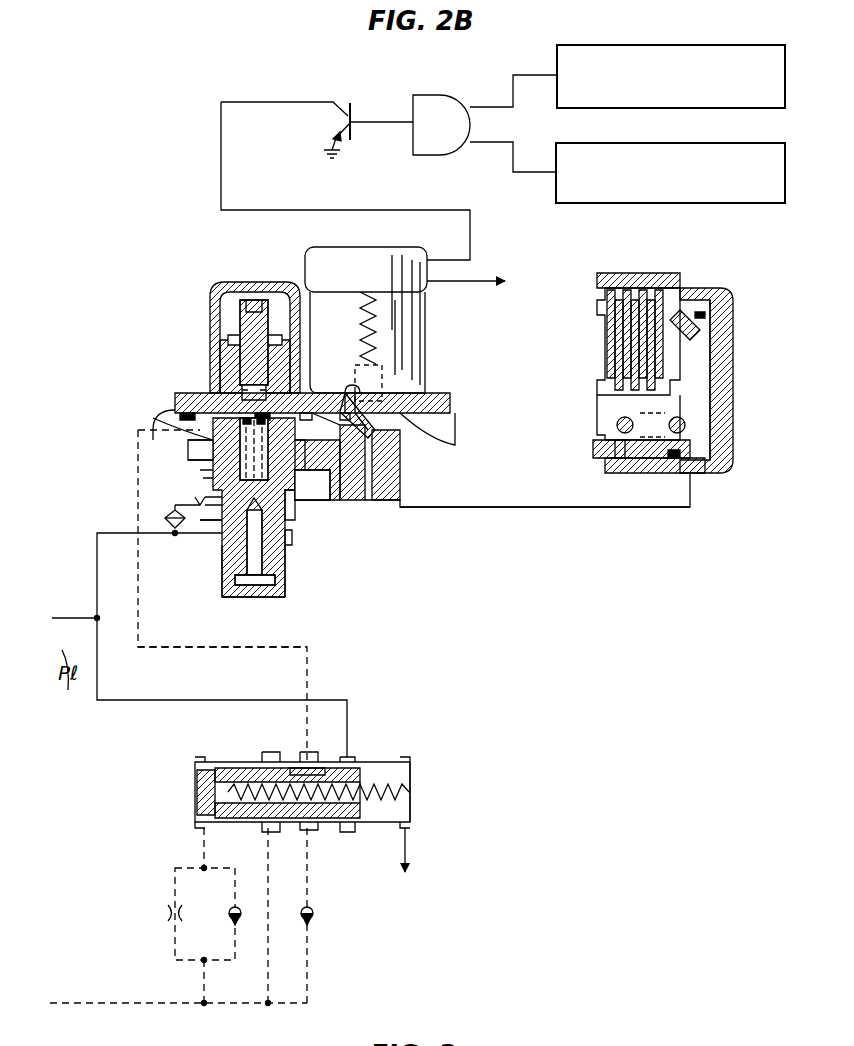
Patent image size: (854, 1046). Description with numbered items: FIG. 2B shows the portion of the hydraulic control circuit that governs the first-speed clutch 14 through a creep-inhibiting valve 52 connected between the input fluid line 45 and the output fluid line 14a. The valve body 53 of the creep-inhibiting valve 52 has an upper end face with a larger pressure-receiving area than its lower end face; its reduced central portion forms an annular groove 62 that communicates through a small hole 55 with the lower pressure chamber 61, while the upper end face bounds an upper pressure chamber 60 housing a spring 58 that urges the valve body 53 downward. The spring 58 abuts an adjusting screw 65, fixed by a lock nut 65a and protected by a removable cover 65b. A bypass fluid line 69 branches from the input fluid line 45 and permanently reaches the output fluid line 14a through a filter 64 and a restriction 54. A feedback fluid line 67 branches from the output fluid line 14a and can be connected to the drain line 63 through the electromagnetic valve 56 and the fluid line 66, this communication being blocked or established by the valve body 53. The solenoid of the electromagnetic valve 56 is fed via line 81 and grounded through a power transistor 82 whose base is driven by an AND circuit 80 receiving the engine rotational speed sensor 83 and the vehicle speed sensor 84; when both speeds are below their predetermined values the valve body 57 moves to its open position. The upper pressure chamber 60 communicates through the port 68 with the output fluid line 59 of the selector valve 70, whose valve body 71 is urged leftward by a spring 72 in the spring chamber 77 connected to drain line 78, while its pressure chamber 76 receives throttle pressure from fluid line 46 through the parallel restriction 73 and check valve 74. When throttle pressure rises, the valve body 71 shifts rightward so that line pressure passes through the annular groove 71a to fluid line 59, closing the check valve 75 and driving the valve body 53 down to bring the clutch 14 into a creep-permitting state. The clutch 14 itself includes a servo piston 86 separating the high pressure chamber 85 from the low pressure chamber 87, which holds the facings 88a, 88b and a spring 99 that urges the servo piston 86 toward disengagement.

The first-speed clutch 14 is at (658, 276).
The output fluid line 14a is at (520, 510).
The input fluid line 45 is at (65, 615).
The fluid line 46 is at (98, 1003).
The creep-inhibiting valve 52 is at (290, 595).
The valve body 53 is at (283, 550).
The restriction 54 is at (195, 500).
The small hole 55 is at (230, 517).
The electromagnetic valve 56 is at (428, 320).
The valve body 57 is at (360, 393).
The spring 58 is at (292, 470).
The output fluid line 59 is at (183, 647).
The upper pressure chamber 60 is at (243, 440).
The lower pressure chamber 61 is at (259, 525).
The annular groove 62 is at (287, 518).
The drain line 63 is at (200, 468).
The filter 64 is at (170, 514).
The adjusting screw 65 is at (253, 298).
The lock nut 65a is at (216, 300).
The cover 65b is at (222, 348).
The fluid line 66 is at (330, 450).
The feedback fluid line 67 is at (380, 482).
The port 68 is at (180, 410).
The bypass fluid line 69 is at (175, 533).
The selector valve 70 is at (395, 758).
The valve body 71 is at (320, 820).
The annular groove 71a is at (300, 768).
The spring 72 is at (398, 790).
The restriction 73 is at (166, 910).
The check valve 74 is at (238, 920).
The check valve 75 is at (315, 916).
The pressure chamber 76 is at (200, 775).
The spring chamber 77 is at (395, 805).
The drain line 78 is at (408, 845).
The AND circuit 80 is at (447, 96).
The line 81 is at (492, 279).
The power transistor 82 is at (352, 110).
The engine rotational speed sensor 83 is at (678, 46).
The vehicle speed sensor 84 is at (682, 144).
The high pressure chamber 85 is at (712, 330).
The servo piston 86 is at (712, 345).
The low pressure chamber 87 is at (680, 415).
The facing 88a is at (620, 350).
The facing 88b is at (630, 326).
The spring 99 is at (612, 448).